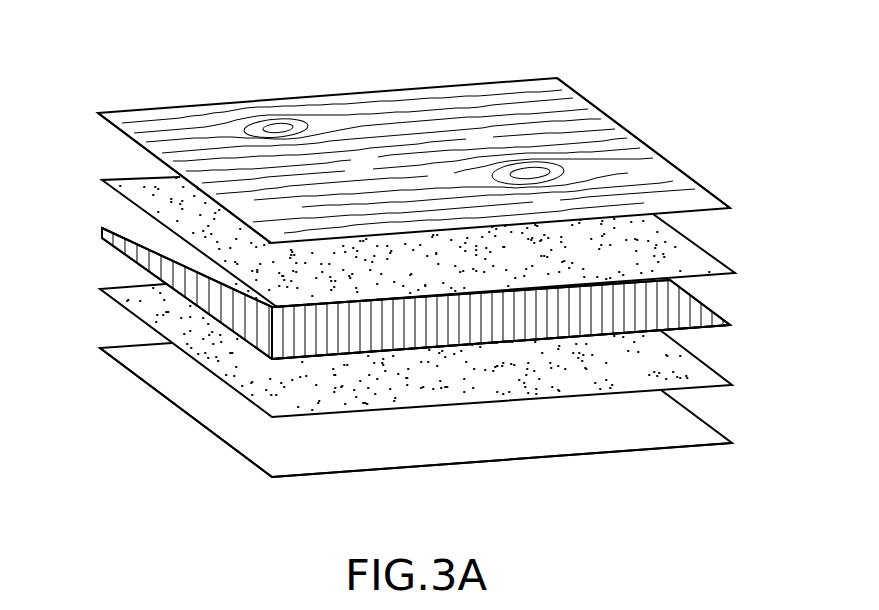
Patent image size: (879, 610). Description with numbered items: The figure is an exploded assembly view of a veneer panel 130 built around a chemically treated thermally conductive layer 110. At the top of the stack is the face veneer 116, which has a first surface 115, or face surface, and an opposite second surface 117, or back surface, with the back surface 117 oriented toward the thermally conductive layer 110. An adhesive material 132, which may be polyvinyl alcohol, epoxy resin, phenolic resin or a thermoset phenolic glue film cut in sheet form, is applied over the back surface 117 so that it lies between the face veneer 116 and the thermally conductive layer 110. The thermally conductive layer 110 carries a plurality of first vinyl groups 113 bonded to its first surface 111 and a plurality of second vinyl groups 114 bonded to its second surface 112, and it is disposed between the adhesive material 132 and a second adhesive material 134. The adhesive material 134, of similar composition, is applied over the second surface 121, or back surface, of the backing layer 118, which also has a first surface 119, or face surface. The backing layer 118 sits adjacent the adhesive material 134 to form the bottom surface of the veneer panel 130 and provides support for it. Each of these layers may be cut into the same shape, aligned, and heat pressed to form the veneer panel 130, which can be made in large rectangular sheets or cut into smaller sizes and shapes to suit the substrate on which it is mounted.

The veneer panel 130 is at (152, 78).
The first surface 115 is at (442, 105).
The face veneer 116 is at (657, 150).
The second surface 117 is at (136, 142).
The adhesive material 132 is at (680, 240).
The thermally conductive layer 110 is at (695, 295).
The first surface 111 is at (422, 333).
The second surface 112 is at (697, 333).
The first vinyl groups 113 is at (176, 270).
The second vinyl groups 114 is at (215, 316).
The adhesive material 134 is at (723, 380).
The backing layer 118 is at (708, 428).
The second surface 121 is at (540, 441).
The first surface 119 is at (233, 448).